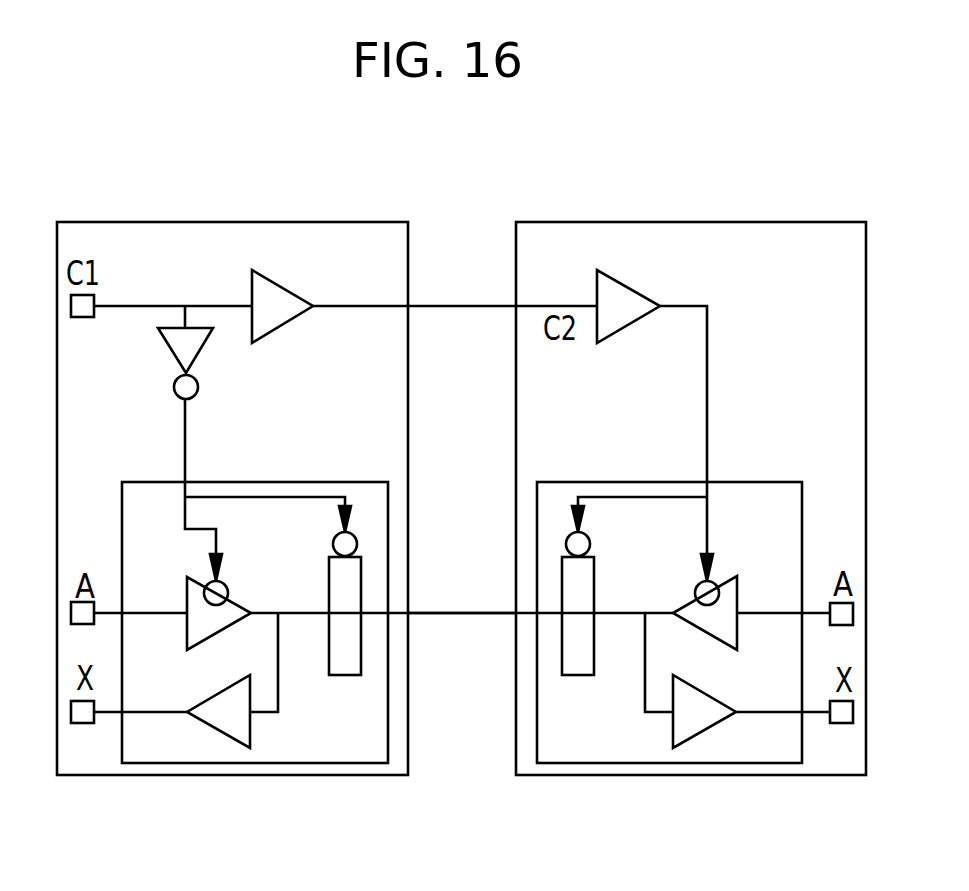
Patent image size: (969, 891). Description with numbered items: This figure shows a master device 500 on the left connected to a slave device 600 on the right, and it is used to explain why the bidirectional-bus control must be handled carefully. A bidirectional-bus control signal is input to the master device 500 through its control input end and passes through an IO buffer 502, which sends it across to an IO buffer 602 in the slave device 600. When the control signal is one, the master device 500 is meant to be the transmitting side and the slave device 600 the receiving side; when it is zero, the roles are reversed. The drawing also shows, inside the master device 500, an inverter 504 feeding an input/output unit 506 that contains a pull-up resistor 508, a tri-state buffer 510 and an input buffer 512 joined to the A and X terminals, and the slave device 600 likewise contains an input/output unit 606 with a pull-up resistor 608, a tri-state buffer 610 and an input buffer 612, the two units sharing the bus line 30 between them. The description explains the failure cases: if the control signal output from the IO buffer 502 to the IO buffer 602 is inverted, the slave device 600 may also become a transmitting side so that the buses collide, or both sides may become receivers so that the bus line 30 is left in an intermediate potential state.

The signal line 30 is at (465, 612).
The master device 500 is at (282, 777).
The IO buffer 502 is at (287, 327).
The inverter 504 is at (202, 350).
The input/output unit 506 is at (138, 482).
The pull-up resistor 508 is at (345, 676).
The tri-state buffer 510 is at (237, 598).
The input buffer 512 is at (205, 700).
The slave device 600 is at (585, 777).
The IO buffer 602 is at (638, 327).
The input/output unit 606 is at (770, 482).
The pull-up resistor 608 is at (582, 676).
The tri-state buffer 610 is at (690, 603).
The input buffer 612 is at (705, 696).